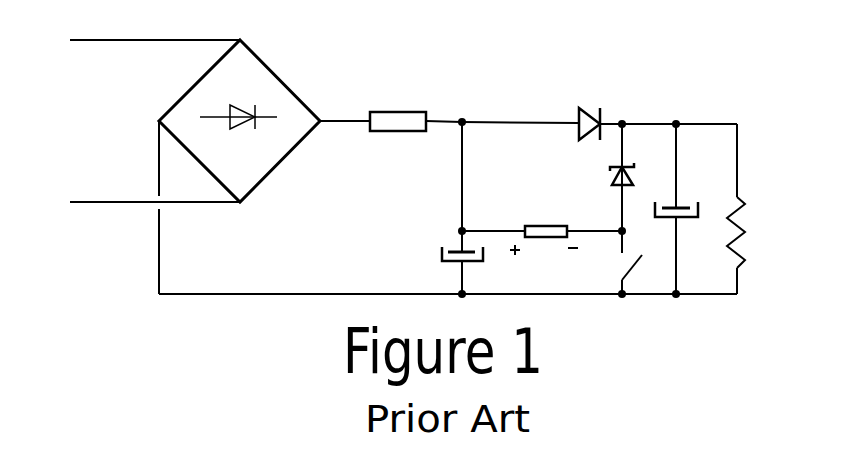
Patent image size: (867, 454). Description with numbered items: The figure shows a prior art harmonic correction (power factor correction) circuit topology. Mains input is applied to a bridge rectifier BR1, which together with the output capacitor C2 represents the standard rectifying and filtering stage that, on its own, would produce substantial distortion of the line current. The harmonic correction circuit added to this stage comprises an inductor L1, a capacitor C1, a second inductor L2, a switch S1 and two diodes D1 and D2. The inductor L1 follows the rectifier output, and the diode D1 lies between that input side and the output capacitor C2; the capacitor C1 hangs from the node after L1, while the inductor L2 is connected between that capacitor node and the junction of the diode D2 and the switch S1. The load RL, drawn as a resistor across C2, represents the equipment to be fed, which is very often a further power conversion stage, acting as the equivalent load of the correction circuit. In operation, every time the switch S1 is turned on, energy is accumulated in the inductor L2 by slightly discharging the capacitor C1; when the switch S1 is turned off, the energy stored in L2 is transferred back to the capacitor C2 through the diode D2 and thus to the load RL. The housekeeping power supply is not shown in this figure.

The bridge rectifier BR1 is at (239, 113).
The inductor L1 is at (398, 107).
The inductor L2 is at (546, 218).
The diode D1 is at (575, 115).
The diode D2 is at (607, 177).
The capacitor C1 is at (446, 255).
The capacitor C2 is at (683, 225).
The switch S1 is at (616, 274).
The load RL is at (749, 223).